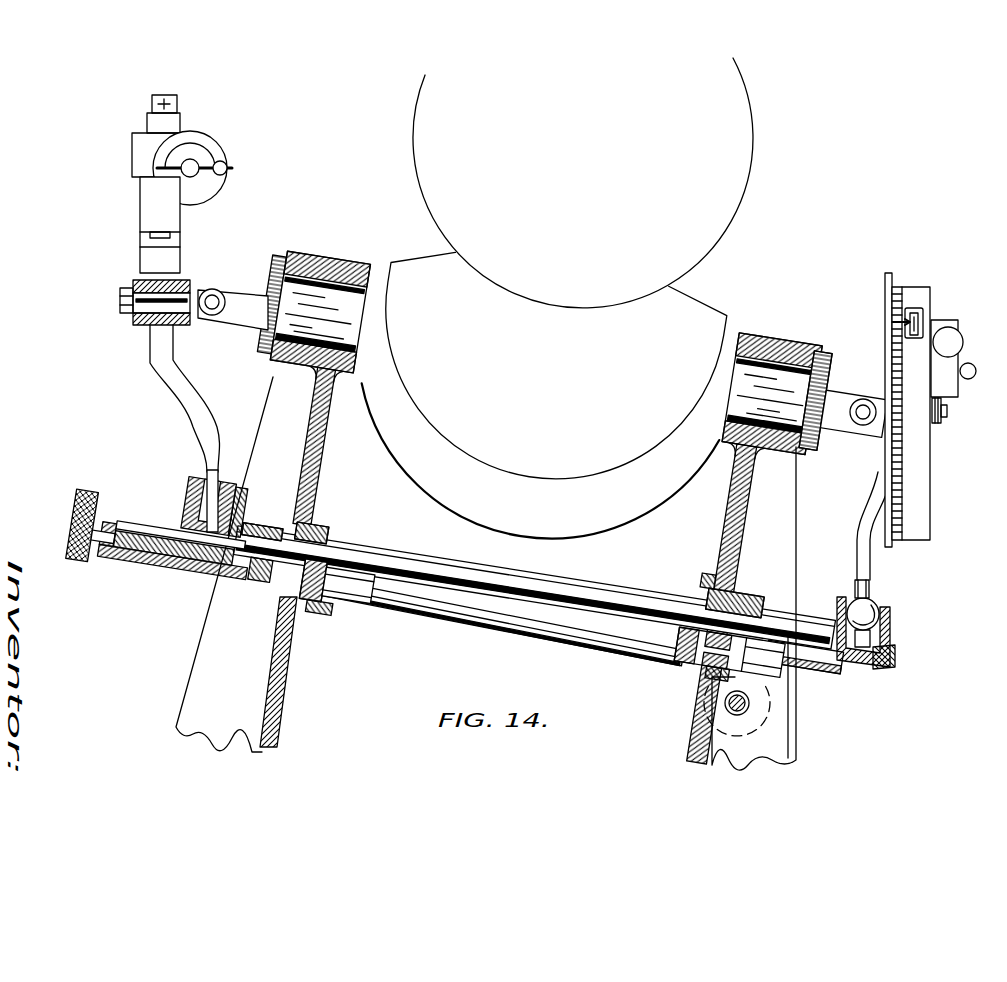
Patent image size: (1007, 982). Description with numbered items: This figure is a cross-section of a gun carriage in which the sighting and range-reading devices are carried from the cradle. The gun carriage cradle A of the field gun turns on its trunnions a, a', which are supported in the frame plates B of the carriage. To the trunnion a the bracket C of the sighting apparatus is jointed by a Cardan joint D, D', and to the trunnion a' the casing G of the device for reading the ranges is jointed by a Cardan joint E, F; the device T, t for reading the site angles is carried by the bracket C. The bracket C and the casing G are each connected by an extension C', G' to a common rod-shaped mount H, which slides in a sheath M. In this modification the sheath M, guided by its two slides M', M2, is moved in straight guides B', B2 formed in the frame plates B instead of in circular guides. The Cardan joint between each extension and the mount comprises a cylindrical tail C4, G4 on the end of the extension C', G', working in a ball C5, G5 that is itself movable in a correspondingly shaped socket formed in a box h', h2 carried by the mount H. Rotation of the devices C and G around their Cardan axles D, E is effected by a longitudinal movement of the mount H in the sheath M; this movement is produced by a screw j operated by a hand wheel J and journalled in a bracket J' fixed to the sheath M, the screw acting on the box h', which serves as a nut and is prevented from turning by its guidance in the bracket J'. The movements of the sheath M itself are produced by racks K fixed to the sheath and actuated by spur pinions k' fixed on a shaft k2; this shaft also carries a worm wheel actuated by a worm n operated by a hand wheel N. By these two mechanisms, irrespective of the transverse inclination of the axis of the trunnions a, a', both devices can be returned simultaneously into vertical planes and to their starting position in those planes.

The gun carriage cradle A is at (443, 488).
The trunnion a is at (313, 297).
The trunnion a' is at (777, 379).
The frame plates B is at (470, 571).
The straight guide B' is at (315, 447).
The straight guide B2 is at (722, 600).
The bracket of the sighting apparatus C is at (161, 184).
The extension C' is at (175, 398).
The cylindrical tail C4 is at (209, 481).
The ball C5 is at (196, 505).
The Cardan joint element D is at (233, 295).
The Cardan joint element D' is at (150, 318).
The Cardan joint element E is at (862, 404).
The Cardan joint element F is at (948, 414).
The device for reading the ranges G is at (920, 410).
The extension G' is at (851, 526).
The cylindrical tail G4 is at (870, 596).
The ball G5 is at (882, 617).
The mount H is at (553, 596).
The box h' is at (251, 507).
The box h2 is at (894, 644).
The hand wheel J is at (75, 527).
The screw j is at (158, 548).
The bracket J' is at (493, 609).
The racks K is at (330, 579).
The spur pinions k' is at (517, 652).
The shaft k2 is at (486, 630).
The sheath M is at (533, 594).
The slide M' is at (303, 552).
The slide M2 is at (742, 608).
The hand wheel N is at (782, 727).
The worm n is at (750, 704).
The site angle reading device T is at (956, 360).
The site angle reading device t is at (977, 373).